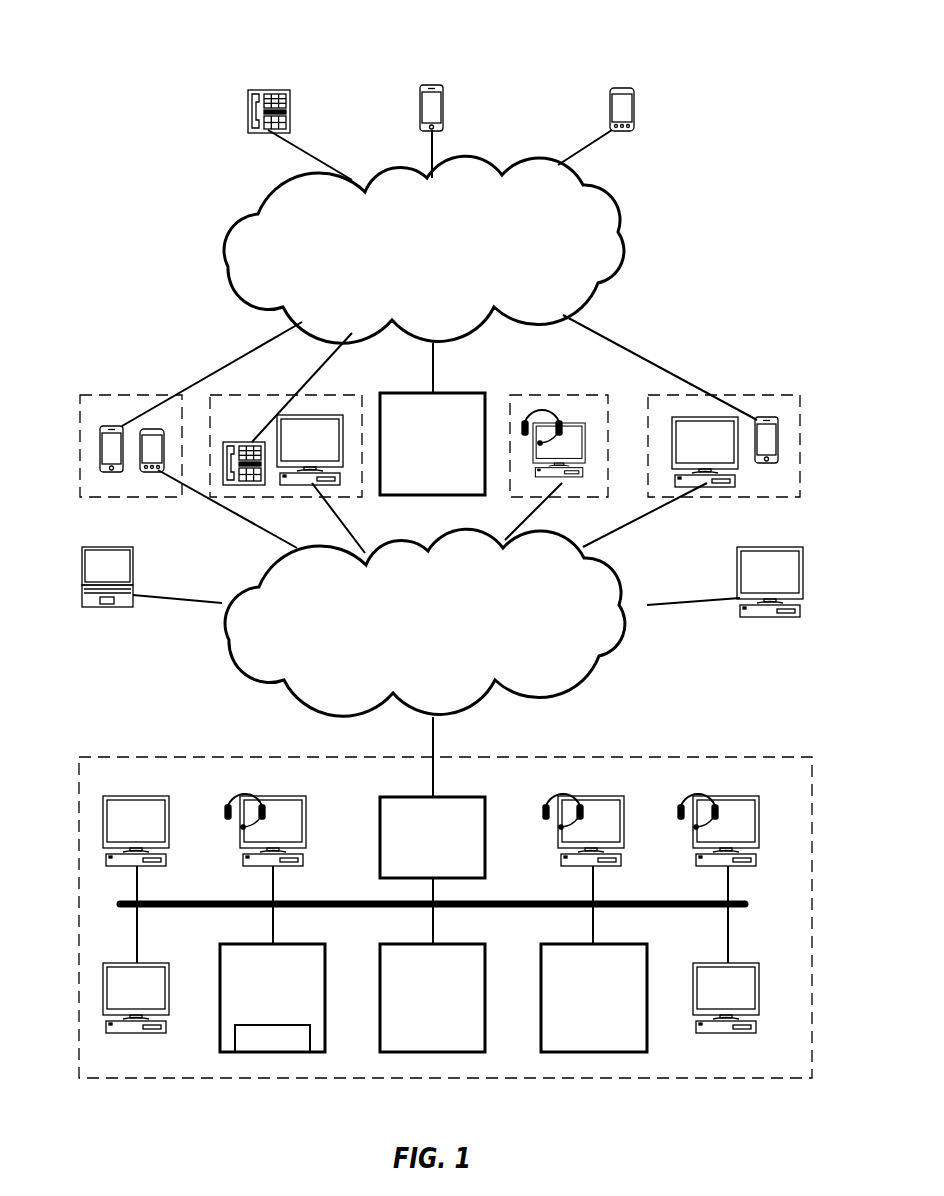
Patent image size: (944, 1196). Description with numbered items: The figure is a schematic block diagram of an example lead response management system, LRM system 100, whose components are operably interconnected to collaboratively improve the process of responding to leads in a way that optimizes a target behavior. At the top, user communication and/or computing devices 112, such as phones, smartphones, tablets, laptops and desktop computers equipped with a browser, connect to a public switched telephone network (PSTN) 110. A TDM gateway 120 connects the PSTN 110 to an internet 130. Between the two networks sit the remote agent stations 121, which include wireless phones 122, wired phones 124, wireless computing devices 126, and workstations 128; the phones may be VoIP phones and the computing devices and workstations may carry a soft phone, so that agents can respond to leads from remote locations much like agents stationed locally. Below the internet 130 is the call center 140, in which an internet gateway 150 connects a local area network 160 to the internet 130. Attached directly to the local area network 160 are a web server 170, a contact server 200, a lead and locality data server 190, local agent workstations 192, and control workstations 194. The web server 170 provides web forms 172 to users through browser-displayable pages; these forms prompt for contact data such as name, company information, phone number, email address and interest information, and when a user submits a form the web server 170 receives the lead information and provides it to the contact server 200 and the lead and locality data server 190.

The LRM system 100 is at (126, 72).
The public switched telephone network 110 is at (418, 271).
The user communication and/or computing devices 112 is at (288, 100).
The TDM gateway 120 is at (418, 478).
The remote agent stations 121 is at (102, 393).
The wireless phones 122 is at (110, 472).
The wired phones 124 is at (250, 485).
The wireless computing devices 126 is at (152, 472).
The workstations 128 is at (338, 415).
The internet 130 is at (418, 645).
The call center 140 is at (100, 755).
The internet gateway 150 is at (418, 867).
The local area network 160 is at (748, 907).
The web server 170 is at (272, 998).
The web forms 172 is at (259, 1049).
The lead and locality data server 190 is at (594, 998).
The local agent workstations 192 is at (152, 796).
The control workstations 194 is at (141, 1033).
The contact server 200 is at (418, 1031).